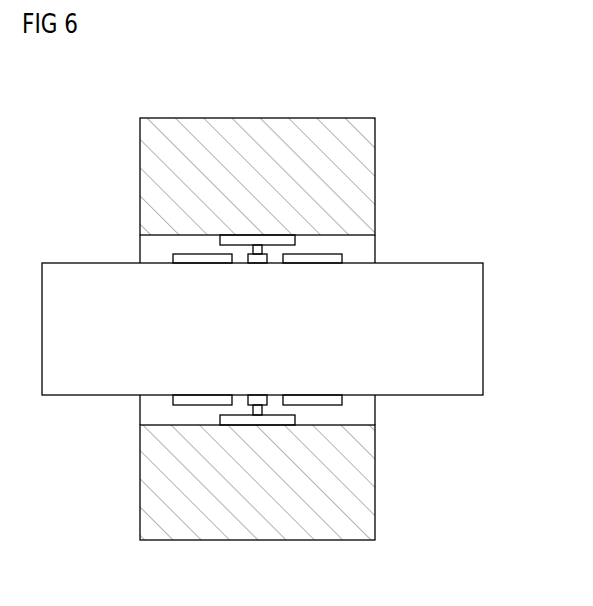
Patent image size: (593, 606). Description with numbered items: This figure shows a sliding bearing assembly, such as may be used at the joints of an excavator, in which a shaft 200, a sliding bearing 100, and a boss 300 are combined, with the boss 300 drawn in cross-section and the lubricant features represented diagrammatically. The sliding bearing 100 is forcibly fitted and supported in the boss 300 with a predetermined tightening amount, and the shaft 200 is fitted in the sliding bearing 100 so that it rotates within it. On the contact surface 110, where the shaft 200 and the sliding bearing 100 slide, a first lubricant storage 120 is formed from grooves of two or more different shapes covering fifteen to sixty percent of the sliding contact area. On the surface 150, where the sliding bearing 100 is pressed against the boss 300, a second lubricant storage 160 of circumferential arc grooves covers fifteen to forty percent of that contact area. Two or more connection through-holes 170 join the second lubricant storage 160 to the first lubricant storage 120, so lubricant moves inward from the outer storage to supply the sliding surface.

The sliding bearing 100 is at (197, 243).
The contact surface 110 is at (275, 396).
The first lubricant storage 120 is at (310, 264).
The surface 150 is at (173, 426).
The second lubricant storage 160 is at (275, 420).
The connection through-holes 170 is at (255, 410).
The shaft 200 is at (473, 336).
The boss 300 is at (183, 133).